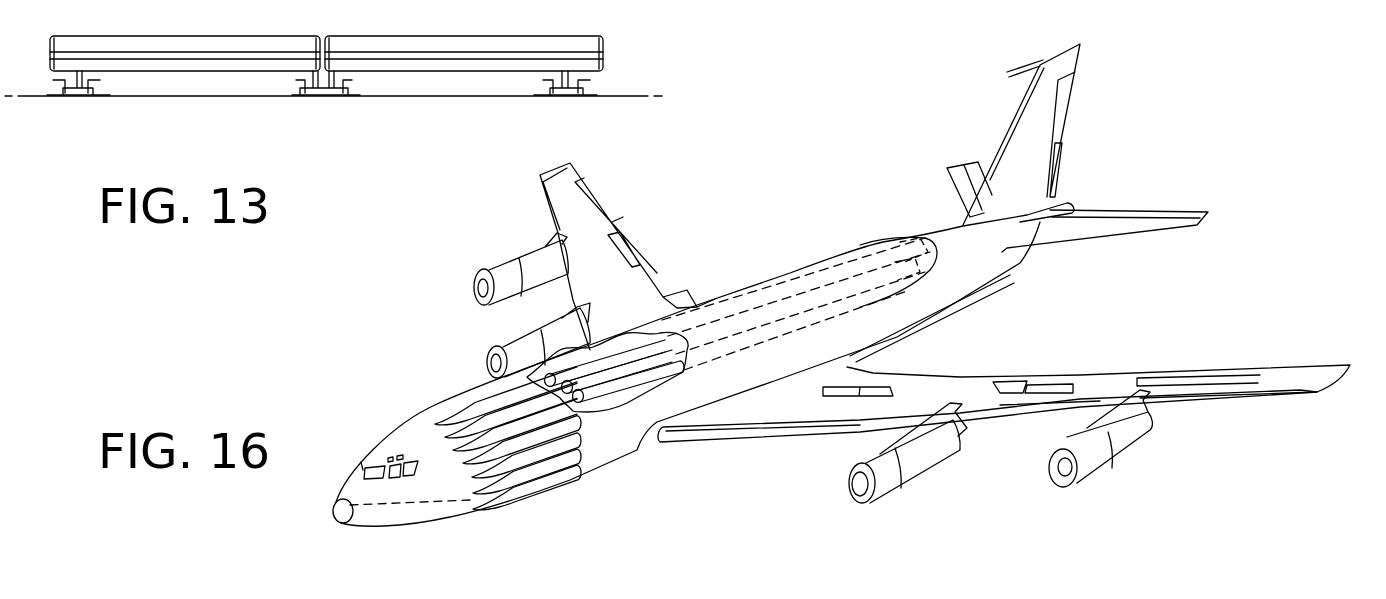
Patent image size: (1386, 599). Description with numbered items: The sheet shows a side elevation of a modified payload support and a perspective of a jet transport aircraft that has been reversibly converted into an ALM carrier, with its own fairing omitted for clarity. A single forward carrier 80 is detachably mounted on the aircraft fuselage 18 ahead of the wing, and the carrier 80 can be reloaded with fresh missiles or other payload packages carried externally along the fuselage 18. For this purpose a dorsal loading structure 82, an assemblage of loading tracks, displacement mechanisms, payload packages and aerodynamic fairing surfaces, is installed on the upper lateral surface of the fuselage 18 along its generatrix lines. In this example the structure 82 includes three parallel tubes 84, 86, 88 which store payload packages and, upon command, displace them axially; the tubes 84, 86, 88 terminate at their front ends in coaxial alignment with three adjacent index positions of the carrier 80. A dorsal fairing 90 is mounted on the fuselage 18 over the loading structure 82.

The aircraft fuselage 18 is at (940, 316).
The single forward carrier 80 is at (543, 507).
The dorsal loading structure 82 is at (777, 254).
The tube 84 is at (618, 352).
The tube 86 is at (650, 355).
The tube 88 is at (612, 385).
The dorsal fairing 90 is at (908, 245).